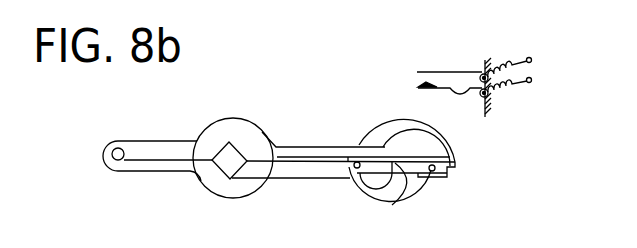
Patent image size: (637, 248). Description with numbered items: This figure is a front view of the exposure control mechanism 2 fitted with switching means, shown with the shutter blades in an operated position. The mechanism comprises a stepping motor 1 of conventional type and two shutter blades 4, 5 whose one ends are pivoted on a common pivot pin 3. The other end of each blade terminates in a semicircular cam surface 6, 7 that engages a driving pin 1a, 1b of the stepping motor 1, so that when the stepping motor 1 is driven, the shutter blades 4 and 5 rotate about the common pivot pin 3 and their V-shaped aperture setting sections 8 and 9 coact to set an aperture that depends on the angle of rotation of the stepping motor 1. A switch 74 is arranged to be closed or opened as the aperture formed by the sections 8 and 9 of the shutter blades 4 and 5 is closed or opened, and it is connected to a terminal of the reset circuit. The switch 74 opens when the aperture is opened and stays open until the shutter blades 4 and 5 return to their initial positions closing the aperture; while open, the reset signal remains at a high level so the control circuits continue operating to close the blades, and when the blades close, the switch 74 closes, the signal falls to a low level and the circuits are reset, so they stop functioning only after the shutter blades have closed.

The stepping motor 1 is at (382, 118).
The driving pin 1a is at (357, 169).
The driving pin 1b is at (432, 172).
The exposure control mechanism 2 is at (466, 167).
The common pivot pin 3 is at (118, 161).
The shutter blade 4 is at (293, 179).
The shutter blade 5 is at (321, 146).
The semicircular cam surface 6 is at (394, 205).
The semicircular cam surface 7 is at (440, 138).
The V-shaped aperture setting section 8 is at (200, 178).
The V-shaped aperture setting section 9 is at (238, 150).
The switch 74 is at (450, 72).